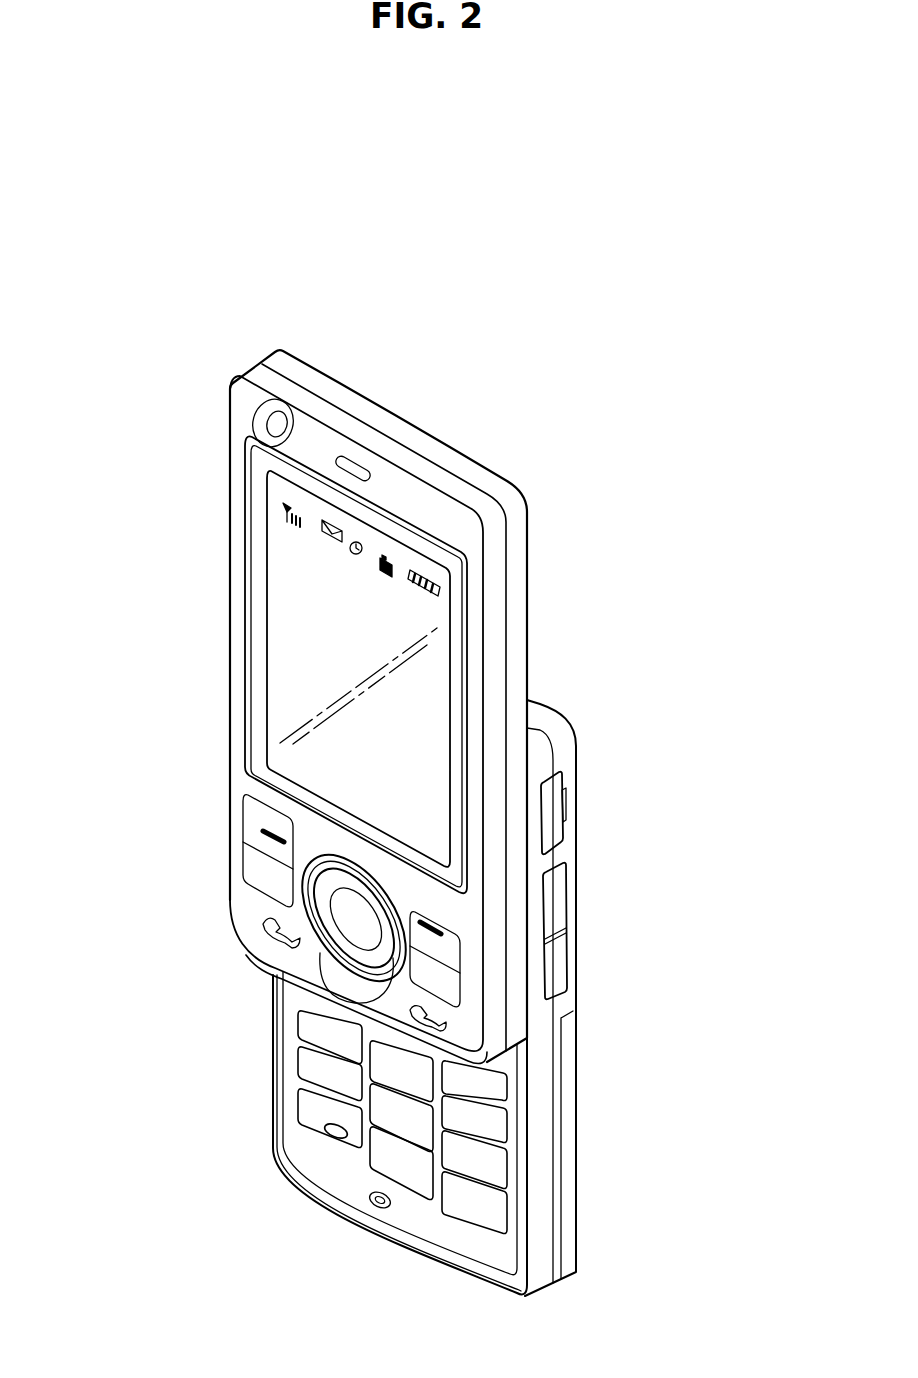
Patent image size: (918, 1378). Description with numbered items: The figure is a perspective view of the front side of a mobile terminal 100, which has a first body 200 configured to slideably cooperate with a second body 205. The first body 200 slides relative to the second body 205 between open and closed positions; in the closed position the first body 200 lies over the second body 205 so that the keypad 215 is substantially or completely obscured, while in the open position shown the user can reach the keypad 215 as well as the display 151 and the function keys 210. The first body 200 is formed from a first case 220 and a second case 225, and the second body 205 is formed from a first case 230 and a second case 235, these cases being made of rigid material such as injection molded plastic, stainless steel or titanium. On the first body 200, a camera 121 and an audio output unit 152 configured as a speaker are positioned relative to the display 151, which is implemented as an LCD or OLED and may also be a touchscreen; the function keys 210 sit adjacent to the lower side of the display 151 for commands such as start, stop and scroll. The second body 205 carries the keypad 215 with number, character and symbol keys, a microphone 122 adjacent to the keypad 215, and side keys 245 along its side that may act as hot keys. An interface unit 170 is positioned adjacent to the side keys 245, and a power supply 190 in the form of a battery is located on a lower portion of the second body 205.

The mobile terminal 100 is at (558, 384).
The camera 121 is at (275, 422).
The microphone 122 is at (378, 1207).
The display 151 is at (278, 607).
The audio output unit 152 is at (355, 472).
The interface unit 170 is at (555, 805).
The power supply 190 is at (565, 1118).
The first body 200 is at (189, 507).
The second body 205 is at (267, 1042).
The function keys 210 is at (258, 868).
The keypad 215 is at (307, 1104).
The first case 220 is at (497, 600).
The second case 225 is at (518, 560).
The first case 230 is at (540, 745).
The second case 235 is at (565, 769).
The side keys 245 is at (558, 962).